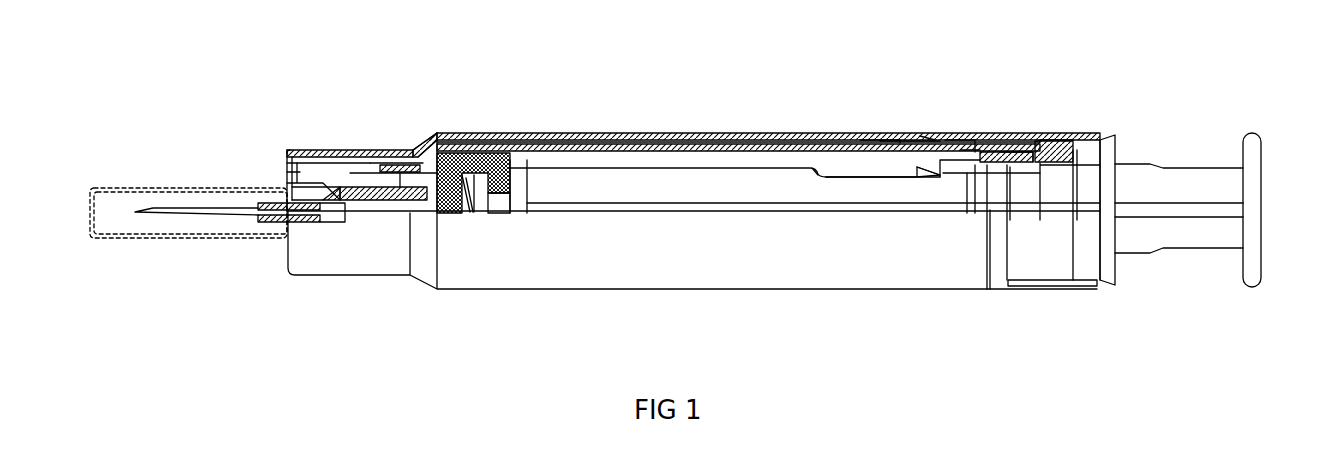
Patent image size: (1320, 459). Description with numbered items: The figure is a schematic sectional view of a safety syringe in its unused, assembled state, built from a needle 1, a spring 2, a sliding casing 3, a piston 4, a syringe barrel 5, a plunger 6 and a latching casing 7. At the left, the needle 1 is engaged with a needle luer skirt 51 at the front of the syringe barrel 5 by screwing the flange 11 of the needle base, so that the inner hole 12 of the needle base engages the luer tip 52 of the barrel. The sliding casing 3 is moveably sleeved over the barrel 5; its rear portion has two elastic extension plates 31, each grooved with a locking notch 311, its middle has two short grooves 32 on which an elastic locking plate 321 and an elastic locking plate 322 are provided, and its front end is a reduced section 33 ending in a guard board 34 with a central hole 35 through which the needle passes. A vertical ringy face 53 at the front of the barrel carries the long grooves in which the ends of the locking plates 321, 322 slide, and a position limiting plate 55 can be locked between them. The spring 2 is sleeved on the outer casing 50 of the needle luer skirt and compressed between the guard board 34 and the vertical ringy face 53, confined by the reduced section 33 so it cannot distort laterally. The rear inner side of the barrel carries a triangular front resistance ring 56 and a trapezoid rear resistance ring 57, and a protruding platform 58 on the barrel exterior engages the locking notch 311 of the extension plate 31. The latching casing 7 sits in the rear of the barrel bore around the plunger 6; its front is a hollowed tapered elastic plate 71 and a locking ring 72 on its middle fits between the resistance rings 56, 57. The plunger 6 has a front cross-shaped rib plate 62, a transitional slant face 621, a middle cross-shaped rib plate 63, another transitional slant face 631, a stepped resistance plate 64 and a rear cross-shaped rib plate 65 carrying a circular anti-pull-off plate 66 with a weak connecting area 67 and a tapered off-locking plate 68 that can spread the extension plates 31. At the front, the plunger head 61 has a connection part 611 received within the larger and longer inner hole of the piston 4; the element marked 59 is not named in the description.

The needle 1 is at (283, 193).
The spring 2 is at (313, 167).
The sliding casing 3 is at (653, 247).
The piston 4 is at (442, 149).
The syringe barrel 5 is at (523, 147).
The plunger 6 is at (1185, 190).
The latching casing 7 is at (1027, 140).
The flange 11 is at (353, 150).
The inner hole 12 is at (353, 183).
The elastic extension plate 31 is at (1087, 137).
The short groove 32 is at (900, 140).
The reduced section 33 is at (288, 158).
The guard board 34 is at (285, 172).
The hole 35 is at (287, 187).
The outer casing of the needle luer skirt 50 is at (370, 150).
The needle luer skirt 51 is at (320, 150).
The luer tip 52 is at (395, 197).
The vertical ringy face 53 is at (380, 141).
The position limiting plate 55 is at (490, 143).
The front resistance ring 56 is at (967, 140).
The rear resistance ring 57 is at (1003, 140).
The protruding platform 58 is at (1068, 140).
The shoulder corner 59 is at (432, 140).
The plunger head 61 is at (497, 200).
The connection part 611 is at (477, 207).
The front cross-shaped rib plate 62 is at (715, 193).
The transitional slant face 621 is at (815, 170).
The middle cross-shaped rib plate 63 is at (857, 190).
The transitional slant face 631 is at (912, 172).
The stepped resistance plate 64 is at (972, 207).
The rear cross-shaped rib plate 65 is at (1073, 203).
The anti-pull-off plate 66 is at (1015, 200).
The weak connecting area 67 is at (1032, 200).
The off-locking plate 68 is at (1108, 250).
The tapered elastic plate 71 is at (965, 168).
The locking ring 72 is at (955, 137).
The locking notch 311 is at (1058, 138).
The elastic locking plate 321 is at (870, 140).
The elastic locking plate 322 is at (928, 136).